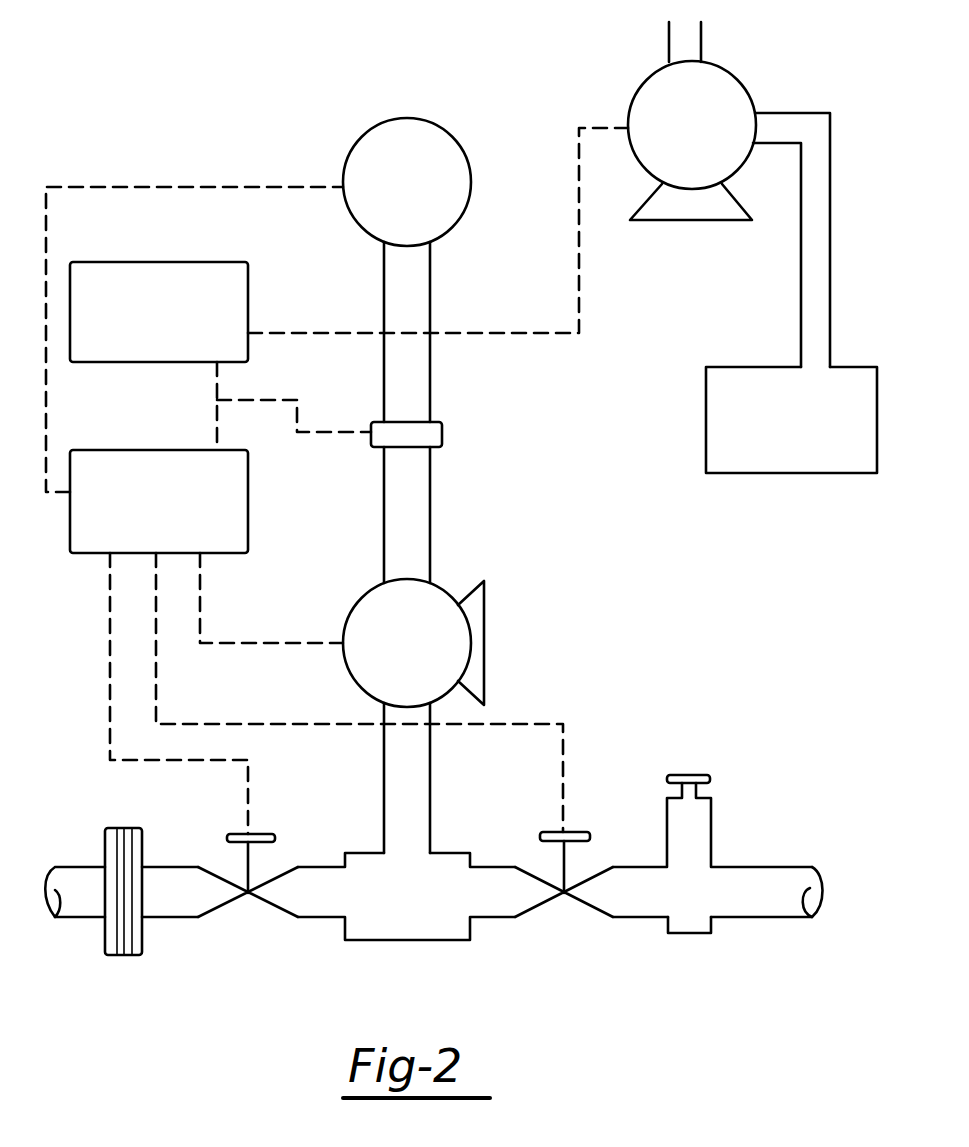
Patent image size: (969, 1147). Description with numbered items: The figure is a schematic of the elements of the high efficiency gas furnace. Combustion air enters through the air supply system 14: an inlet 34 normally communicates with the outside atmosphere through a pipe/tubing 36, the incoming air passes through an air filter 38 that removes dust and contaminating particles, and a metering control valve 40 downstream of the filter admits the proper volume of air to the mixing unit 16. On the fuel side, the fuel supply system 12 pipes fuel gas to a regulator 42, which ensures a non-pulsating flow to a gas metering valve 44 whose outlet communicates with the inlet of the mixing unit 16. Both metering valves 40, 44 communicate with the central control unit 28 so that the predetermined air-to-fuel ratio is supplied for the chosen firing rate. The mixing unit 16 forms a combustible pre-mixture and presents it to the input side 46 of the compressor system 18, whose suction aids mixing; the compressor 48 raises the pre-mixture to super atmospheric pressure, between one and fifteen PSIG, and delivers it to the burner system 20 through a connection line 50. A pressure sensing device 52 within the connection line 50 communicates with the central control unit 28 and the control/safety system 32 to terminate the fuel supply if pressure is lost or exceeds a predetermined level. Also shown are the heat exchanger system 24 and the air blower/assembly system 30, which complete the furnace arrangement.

The fuel supply system 12 is at (726, 732).
The air supply system 14 is at (122, 810).
The mixing unit 16 is at (426, 912).
The compressor system 18 is at (424, 660).
The burner system 20 is at (424, 199).
The heat exchanger system 24 is at (808, 436).
The central control unit 28 is at (168, 518).
The air blower/assembly system 30 is at (706, 141).
The control/safety system 32 is at (164, 328).
The inlet 34 is at (55, 883).
The pipe/tubing 36 is at (75, 917).
The air filter 38 is at (118, 955).
The metering control valve 40 is at (248, 893).
The regulator 42 is at (683, 918).
The gas metering valve 44 is at (564, 893).
The input side 46 is at (400, 712).
The compressor 48 is at (484, 638).
The connection line 50 is at (407, 472).
The pressure sensing device 52 is at (423, 438).